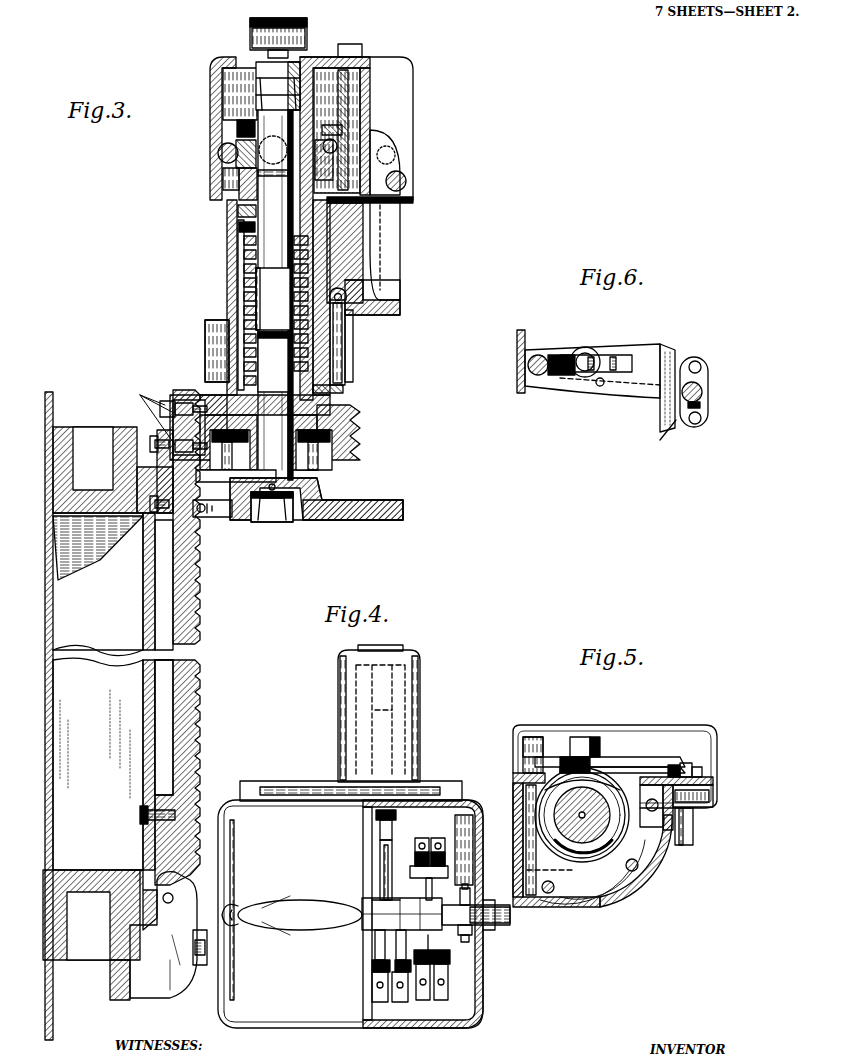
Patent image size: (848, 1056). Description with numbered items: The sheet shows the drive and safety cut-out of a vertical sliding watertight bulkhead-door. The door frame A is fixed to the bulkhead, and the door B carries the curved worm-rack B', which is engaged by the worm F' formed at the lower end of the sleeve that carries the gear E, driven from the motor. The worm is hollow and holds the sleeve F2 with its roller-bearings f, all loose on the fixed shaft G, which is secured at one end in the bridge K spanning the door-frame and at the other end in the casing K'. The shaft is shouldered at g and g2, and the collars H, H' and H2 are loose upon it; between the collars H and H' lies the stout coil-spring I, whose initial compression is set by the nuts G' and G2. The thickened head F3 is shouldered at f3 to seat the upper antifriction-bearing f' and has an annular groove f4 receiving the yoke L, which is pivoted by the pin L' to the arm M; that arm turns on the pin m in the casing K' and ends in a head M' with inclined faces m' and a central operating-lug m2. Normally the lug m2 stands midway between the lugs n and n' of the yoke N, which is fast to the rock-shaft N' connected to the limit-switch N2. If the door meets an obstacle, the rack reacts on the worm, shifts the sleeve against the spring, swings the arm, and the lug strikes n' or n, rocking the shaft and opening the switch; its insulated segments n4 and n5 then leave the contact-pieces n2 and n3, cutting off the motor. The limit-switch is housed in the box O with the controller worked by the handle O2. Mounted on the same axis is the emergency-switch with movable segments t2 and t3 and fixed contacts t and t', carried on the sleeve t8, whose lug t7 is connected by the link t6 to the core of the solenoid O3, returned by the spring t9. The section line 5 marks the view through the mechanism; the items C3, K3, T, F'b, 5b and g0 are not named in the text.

In FIG. 3, the adjusting knob C3 is at (225, 62).
In FIG. 3, the cover lug K3 is at (355, 55).
In FIG. 3, the nut G2 is at (292, 80).
In FIG. 3, the collar H2 is at (240, 126).
In FIG. 5, the collar H2 is at (590, 860).
In FIG. 3, the pin m is at (210, 145).
In FIG. 5, the pin m is at (505, 840).
In FIG. 6, the pin m is at (538, 385).
In FIG. 3, the section line 5 is at (210, 155).
In FIG. 3, the thickened head F3 is at (222, 176).
In FIG. 3, the shoulder f3 is at (245, 195).
In FIG. 3, the upper antifriction-bearing f' is at (220, 211).
In FIG. 3, the collar H' is at (215, 305).
In FIG. 3, the worm F' is at (215, 310).
In FIG. 5, the worm F' is at (608, 874).
In FIG. 3, the coil-spring I is at (226, 297).
In FIG. 3, the shoulder g2 is at (273, 299).
In FIG. 3, the shoulder g is at (273, 362).
In FIG. 3, the gear E is at (345, 345).
In FIG. 3, the collar H is at (356, 346).
In FIG. 3, the roller-bearings f is at (335, 394).
In FIG. 3, the fixed shaft G is at (347, 432).
In FIG. 5, the fixed shaft G is at (596, 744).
In FIG. 3, the sleeve F2 is at (312, 468).
In FIG. 3, the bridge K is at (298, 528).
In FIG. 3, the nut G' is at (272, 520).
In FIG. 3, the annular groove f4 is at (336, 135).
In FIG. 5, the annular groove f4 is at (625, 830).
In FIG. 3, the yoke L is at (372, 144).
In FIG. 5, the yoke L is at (541, 731).
In FIG. 6, the yoke L is at (599, 351).
In FIG. 3, the head M' is at (391, 161).
In FIG. 5, the head M' is at (694, 766).
In FIG. 6, the head M' is at (697, 373).
In FIG. 3, the rock-shaft N' is at (412, 156).
In FIG. 4, the rock-shaft N' is at (494, 935).
In FIG. 5, the rock-shaft N' is at (705, 826).
In FIG. 6, the rock-shaft N' is at (718, 403).
In FIG. 3, the central operating-lug m2 is at (400, 203).
In FIG. 5, the central operating-lug m2 is at (694, 766).
In FIG. 6, the central operating-lug m2 is at (704, 388).
In FIG. 3, the lug n' is at (384, 253).
In FIG. 6, the lug n' is at (717, 367).
In FIG. 3, the casing K' is at (389, 289).
In FIG. 5, the casing K' is at (636, 872).
In FIG. 6, the casing K' is at (506, 361).
In FIG. 3, the frame of the door A is at (108, 716).
In FIG. 3, the curved worm-rack B' is at (193, 520).
In FIG. 3, the door B is at (177, 829).
In FIG. 4, the solenoid O3 is at (412, 740).
In FIG. 4, the spring t9 is at (378, 814).
In FIG. 4, the link t6 is at (382, 862).
In FIG. 4, the contact-piece n2 is at (418, 845).
In FIG. 4, the insulated contact-segment n4 is at (475, 858).
In FIG. 4, the switch block T is at (369, 935).
In FIG. 4, the lug t7 is at (420, 915).
In FIG. 4, the limit-switch N2 is at (420, 906).
In FIG. 4, the handle O2 is at (272, 910).
In FIG. 4, the box O is at (276, 936).
In FIG. 4, the sleeve t8 is at (372, 928).
In FIG. 4, the movable contact-segment t2 is at (395, 945).
In FIG. 4, the movable contact-segment t3 is at (372, 975).
In FIG. 4, the fixed contact t is at (363, 992).
In FIG. 4, the fixed contact t' is at (396, 993).
In FIG. 4, the insulated contact-segment n5 is at (446, 970).
In FIG. 4, the contact-piece n3 is at (440, 1000).
In FIG. 3, the bracket F'b is at (235, 427).
In FIG. 3, the screw 5b is at (408, 184).
In FIG. 5, the valve stem section g0 is at (575, 845).
In FIG. 5, the pin L' is at (592, 724).
In FIG. 6, the pin L' is at (597, 346).
In FIG. 5, the arm M is at (611, 736).
In FIG. 6, the arm M is at (592, 382).
In FIG. 5, the inclined faces m' is at (712, 754).
In FIG. 6, the inclined faces m' is at (699, 396).
In FIG. 5, the lug n is at (722, 776).
In FIG. 6, the lug n is at (685, 436).
In FIG. 6, the yoke N is at (716, 419).